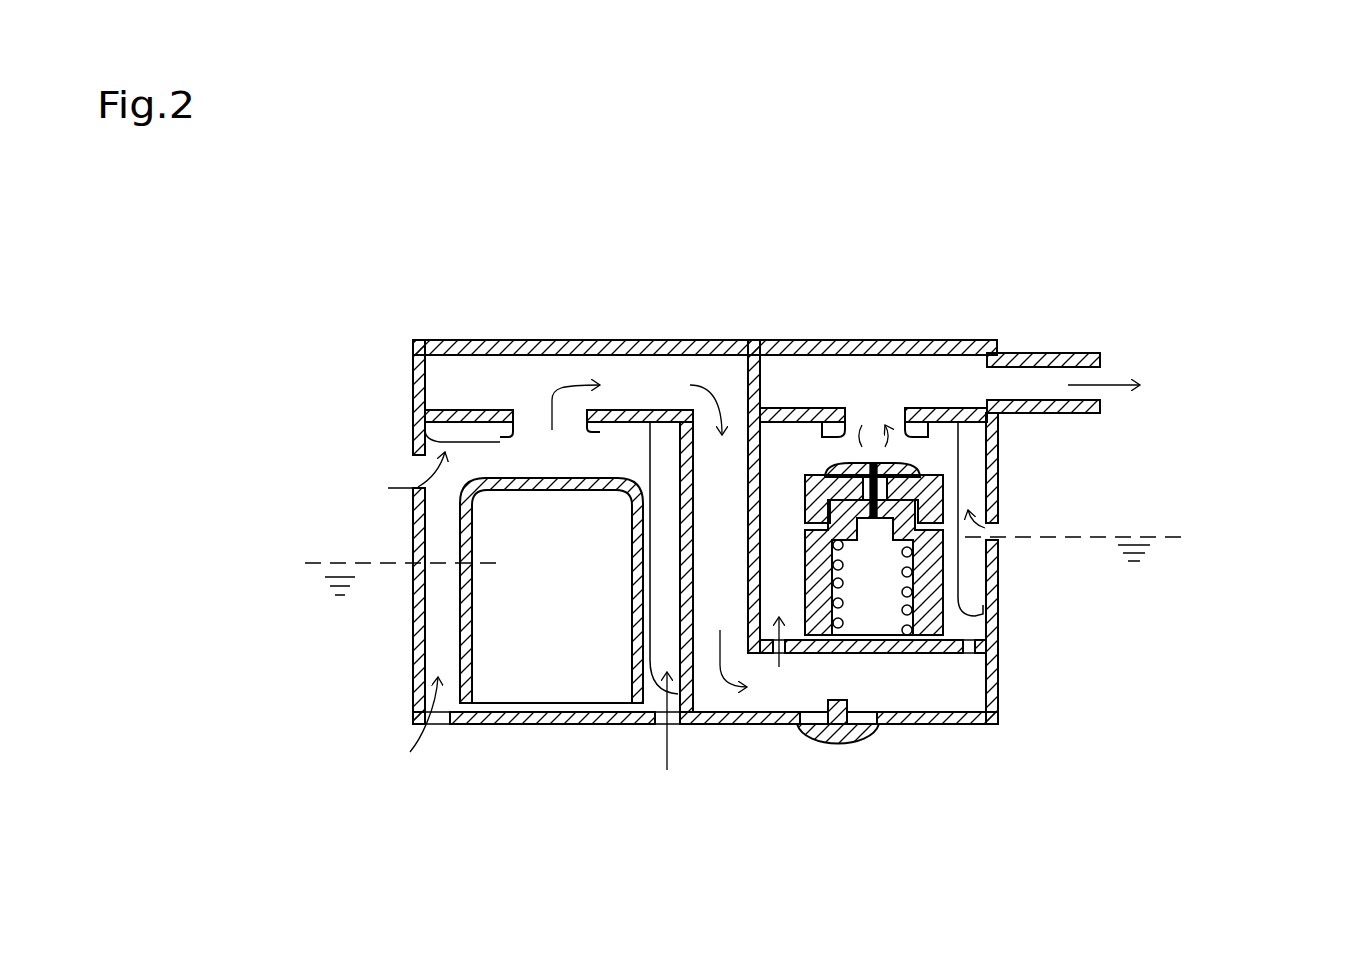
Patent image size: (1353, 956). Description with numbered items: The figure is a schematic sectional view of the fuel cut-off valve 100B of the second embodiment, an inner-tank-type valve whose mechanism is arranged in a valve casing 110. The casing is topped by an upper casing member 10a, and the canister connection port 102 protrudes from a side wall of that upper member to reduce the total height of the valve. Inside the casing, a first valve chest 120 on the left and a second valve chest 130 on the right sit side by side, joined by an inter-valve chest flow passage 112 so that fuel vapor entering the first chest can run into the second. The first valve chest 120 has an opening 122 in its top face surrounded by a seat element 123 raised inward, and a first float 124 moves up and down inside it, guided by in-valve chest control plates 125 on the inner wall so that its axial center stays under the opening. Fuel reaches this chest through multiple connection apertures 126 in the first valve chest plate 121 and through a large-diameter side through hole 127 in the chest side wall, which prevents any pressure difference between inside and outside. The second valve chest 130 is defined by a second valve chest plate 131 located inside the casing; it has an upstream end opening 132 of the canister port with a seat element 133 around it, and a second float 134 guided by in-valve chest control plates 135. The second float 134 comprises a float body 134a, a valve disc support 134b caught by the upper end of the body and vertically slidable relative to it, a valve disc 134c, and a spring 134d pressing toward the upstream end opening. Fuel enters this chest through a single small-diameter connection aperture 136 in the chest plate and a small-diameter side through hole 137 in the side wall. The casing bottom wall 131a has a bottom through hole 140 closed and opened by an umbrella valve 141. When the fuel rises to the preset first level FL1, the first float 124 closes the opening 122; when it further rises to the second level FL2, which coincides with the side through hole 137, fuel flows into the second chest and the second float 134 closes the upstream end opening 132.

The fuel cut-off valve 100B is at (397, 218).
The valve casing 110 is at (580, 335).
The casing top wall 10a is at (797, 343).
The canister connection port 102 is at (1037, 353).
The first valve chest 120 is at (433, 597).
The first valve chest plate 121 is at (532, 725).
The opening 122 is at (530, 410).
The seat element 123 is at (500, 440).
The first float 124 is at (465, 623).
The in-valve chest control plates 125 is at (663, 587).
The connection apertures 126 is at (442, 718).
The side through hole 127 is at (415, 478).
The inter-valve chest flow passage 112 is at (738, 502).
The second valve chest 130 is at (788, 443).
The second valve chest plate 131 is at (800, 653).
The casing bottom wall 131a is at (712, 725).
The upstream end opening 132 is at (890, 418).
The seat element 133 is at (840, 446).
The second float 134 is at (945, 625).
The float body 134a is at (940, 628).
The valve disc support 134b is at (935, 493).
The valve disc 134c is at (920, 462).
The spring 134d is at (887, 645).
The in-valve chest control plates 135 is at (975, 606).
The connection aperture 136 is at (777, 653).
The side through hole 137 is at (997, 538).
The bottom through hole 140 is at (870, 712).
The umbrella valve 141 is at (857, 745).
The first level FL1 is at (320, 563).
The second level FL2 is at (1150, 537).